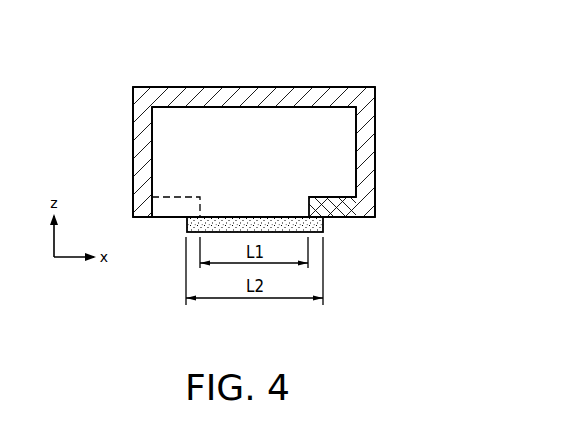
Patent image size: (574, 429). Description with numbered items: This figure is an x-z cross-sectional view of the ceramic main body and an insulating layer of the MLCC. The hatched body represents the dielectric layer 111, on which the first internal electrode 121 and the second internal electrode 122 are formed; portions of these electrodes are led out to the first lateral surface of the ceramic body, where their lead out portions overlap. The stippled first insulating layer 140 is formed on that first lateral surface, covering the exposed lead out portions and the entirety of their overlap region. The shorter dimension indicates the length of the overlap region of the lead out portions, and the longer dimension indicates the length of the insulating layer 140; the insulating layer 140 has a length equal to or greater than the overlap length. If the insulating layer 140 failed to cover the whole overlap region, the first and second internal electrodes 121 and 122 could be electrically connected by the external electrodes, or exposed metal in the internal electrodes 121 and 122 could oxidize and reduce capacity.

The dielectric layer 111 is at (310, 88).
The first internal electrode 121 is at (345, 145).
The second internal electrode 122 is at (178, 146).
The insulating layer 140 is at (253, 223).